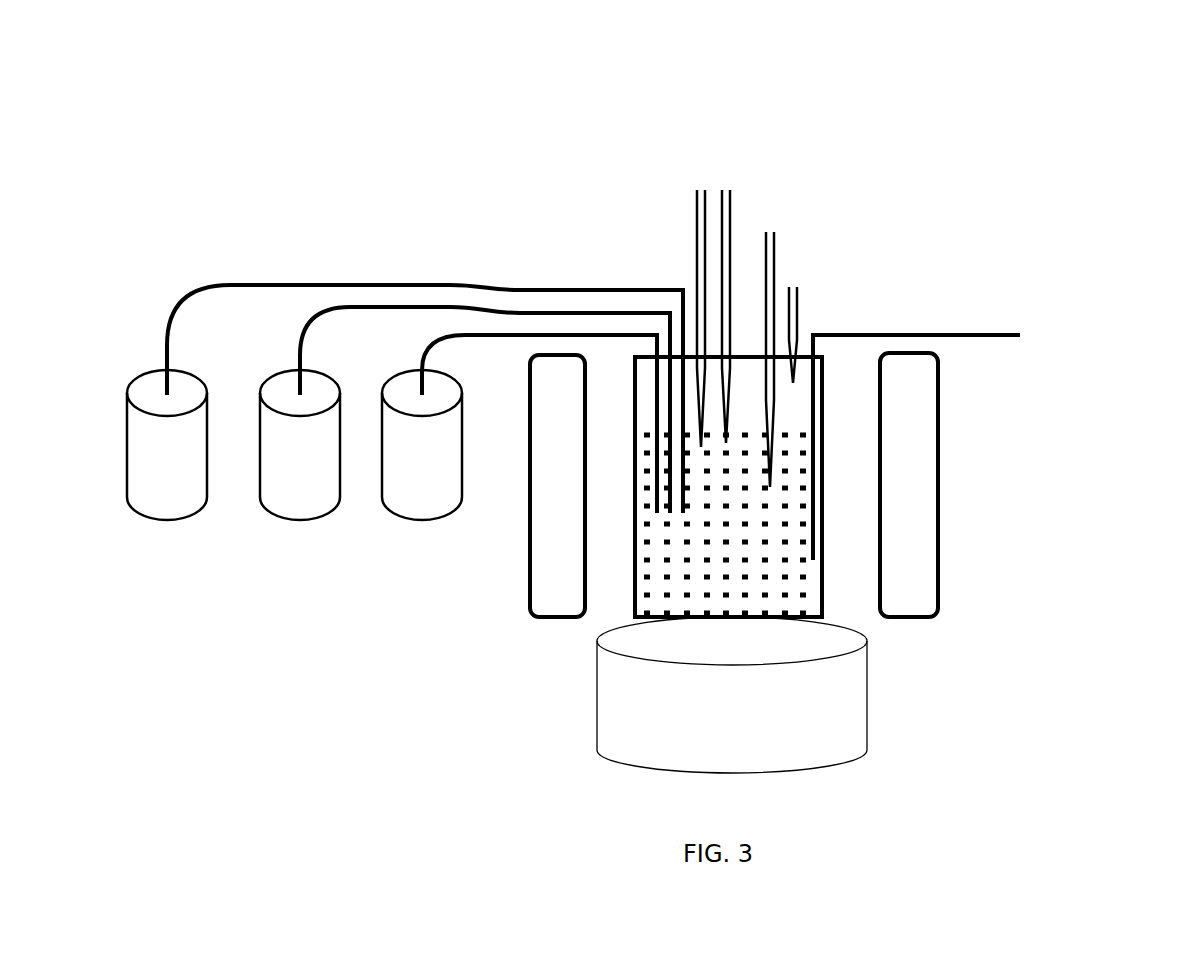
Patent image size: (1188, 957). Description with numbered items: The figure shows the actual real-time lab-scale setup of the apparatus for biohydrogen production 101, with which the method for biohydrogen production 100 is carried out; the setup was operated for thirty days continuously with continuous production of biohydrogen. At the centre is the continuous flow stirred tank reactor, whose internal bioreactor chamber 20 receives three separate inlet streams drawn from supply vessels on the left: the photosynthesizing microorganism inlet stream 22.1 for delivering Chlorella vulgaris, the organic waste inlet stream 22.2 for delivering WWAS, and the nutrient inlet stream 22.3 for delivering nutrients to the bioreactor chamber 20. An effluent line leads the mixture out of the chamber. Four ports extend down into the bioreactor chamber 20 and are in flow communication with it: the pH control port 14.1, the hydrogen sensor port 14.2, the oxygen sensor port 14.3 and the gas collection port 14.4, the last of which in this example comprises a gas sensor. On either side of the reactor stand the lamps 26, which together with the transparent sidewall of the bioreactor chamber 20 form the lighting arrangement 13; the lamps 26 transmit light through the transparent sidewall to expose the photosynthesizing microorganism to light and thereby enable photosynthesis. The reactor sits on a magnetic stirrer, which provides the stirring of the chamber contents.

The method for biohydrogen production 100 is at (1012, 194).
The apparatus for biohydrogen production 101 is at (638, 418).
The lighting arrangement 13 is at (498, 578).
The bioreactor chamber 20 is at (820, 567).
The lamps 26 is at (555, 587).
The photosynthesizing microorganism inlet stream 22.1 is at (252, 283).
The organic waste inlet stream 22.2 is at (630, 312).
The nutrient inlet stream 22.3 is at (575, 335).
The pH control port 14.1 is at (700, 188).
The hydrogen sensor port 14.2 is at (727, 190).
The oxygen sensor port 14.3 is at (770, 245).
The gas collection port 14.4 is at (795, 300).